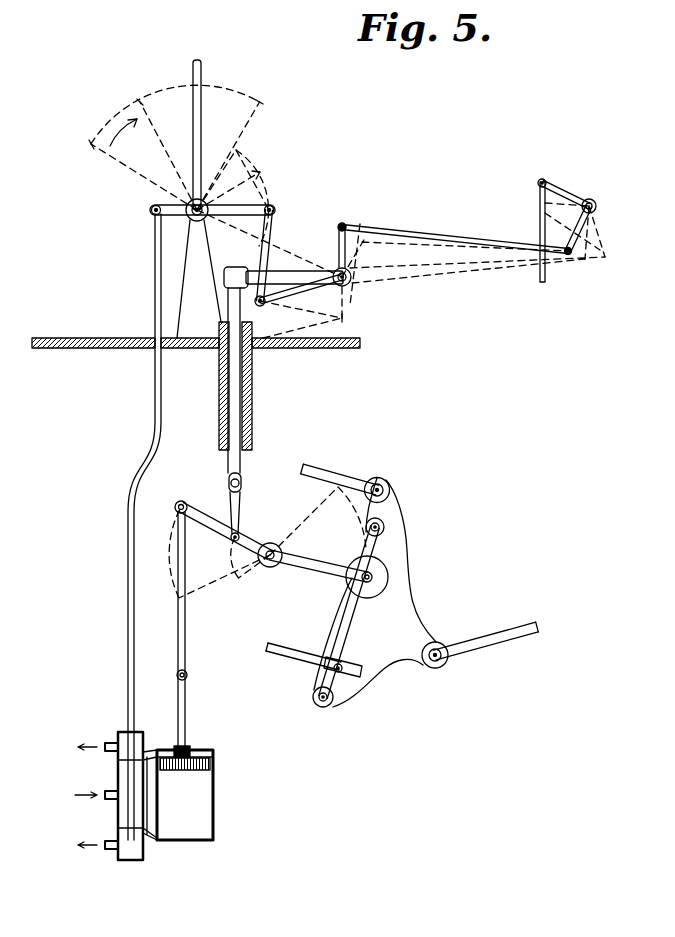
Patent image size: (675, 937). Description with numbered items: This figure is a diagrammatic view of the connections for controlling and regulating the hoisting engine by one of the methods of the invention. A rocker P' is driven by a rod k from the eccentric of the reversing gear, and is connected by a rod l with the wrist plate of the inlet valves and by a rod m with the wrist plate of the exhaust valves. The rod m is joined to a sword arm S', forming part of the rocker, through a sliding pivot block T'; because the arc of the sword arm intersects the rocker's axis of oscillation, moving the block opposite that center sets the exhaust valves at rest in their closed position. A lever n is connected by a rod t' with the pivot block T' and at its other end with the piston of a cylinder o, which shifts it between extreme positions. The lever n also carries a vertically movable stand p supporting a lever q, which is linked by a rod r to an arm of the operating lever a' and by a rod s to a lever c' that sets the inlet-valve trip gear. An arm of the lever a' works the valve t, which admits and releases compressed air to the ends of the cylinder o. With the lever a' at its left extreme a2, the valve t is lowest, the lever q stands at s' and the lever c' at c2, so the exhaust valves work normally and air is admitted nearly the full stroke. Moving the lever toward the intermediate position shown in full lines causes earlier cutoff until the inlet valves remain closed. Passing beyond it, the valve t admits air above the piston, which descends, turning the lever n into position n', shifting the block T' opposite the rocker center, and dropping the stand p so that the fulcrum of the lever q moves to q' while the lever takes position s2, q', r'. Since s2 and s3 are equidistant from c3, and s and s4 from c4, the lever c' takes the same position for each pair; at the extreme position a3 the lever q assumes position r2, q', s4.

The operating lever a' is at (183, 135).
The extreme left position of operating lever a2 is at (131, 166).
The extreme right position of operating lever a3 is at (262, 104).
The rod r is at (272, 256).
The position of lever q end r' is at (274, 310).
The position of lever q end r2 is at (263, 334).
The lever q is at (301, 294).
The lowered fulcrum position of lever q q' is at (320, 308).
The vertically movable stand p is at (237, 382).
The rod s is at (451, 228).
The position of lever q s' is at (477, 255).
The position of lever q s2 is at (353, 283).
The position of lever q s3 is at (360, 232).
The position of lever q s4 is at (339, 266).
The lever c' is at (585, 196).
The position of lever c' c2 is at (606, 239).
The position of lever c' c3 is at (588, 243).
The position of lever c' c4 is at (571, 246).
The rod l is at (322, 476).
The lever n is at (275, 534).
The shifted position of lever n n' is at (219, 625).
The rocker P' is at (376, 592).
The sword arm S' is at (384, 539).
The rod t' is at (349, 612).
The rod k is at (478, 641).
The rod m is at (293, 650).
The sliding pivot block T' is at (320, 682).
The valve t is at (116, 796).
The cylinder o is at (195, 793).